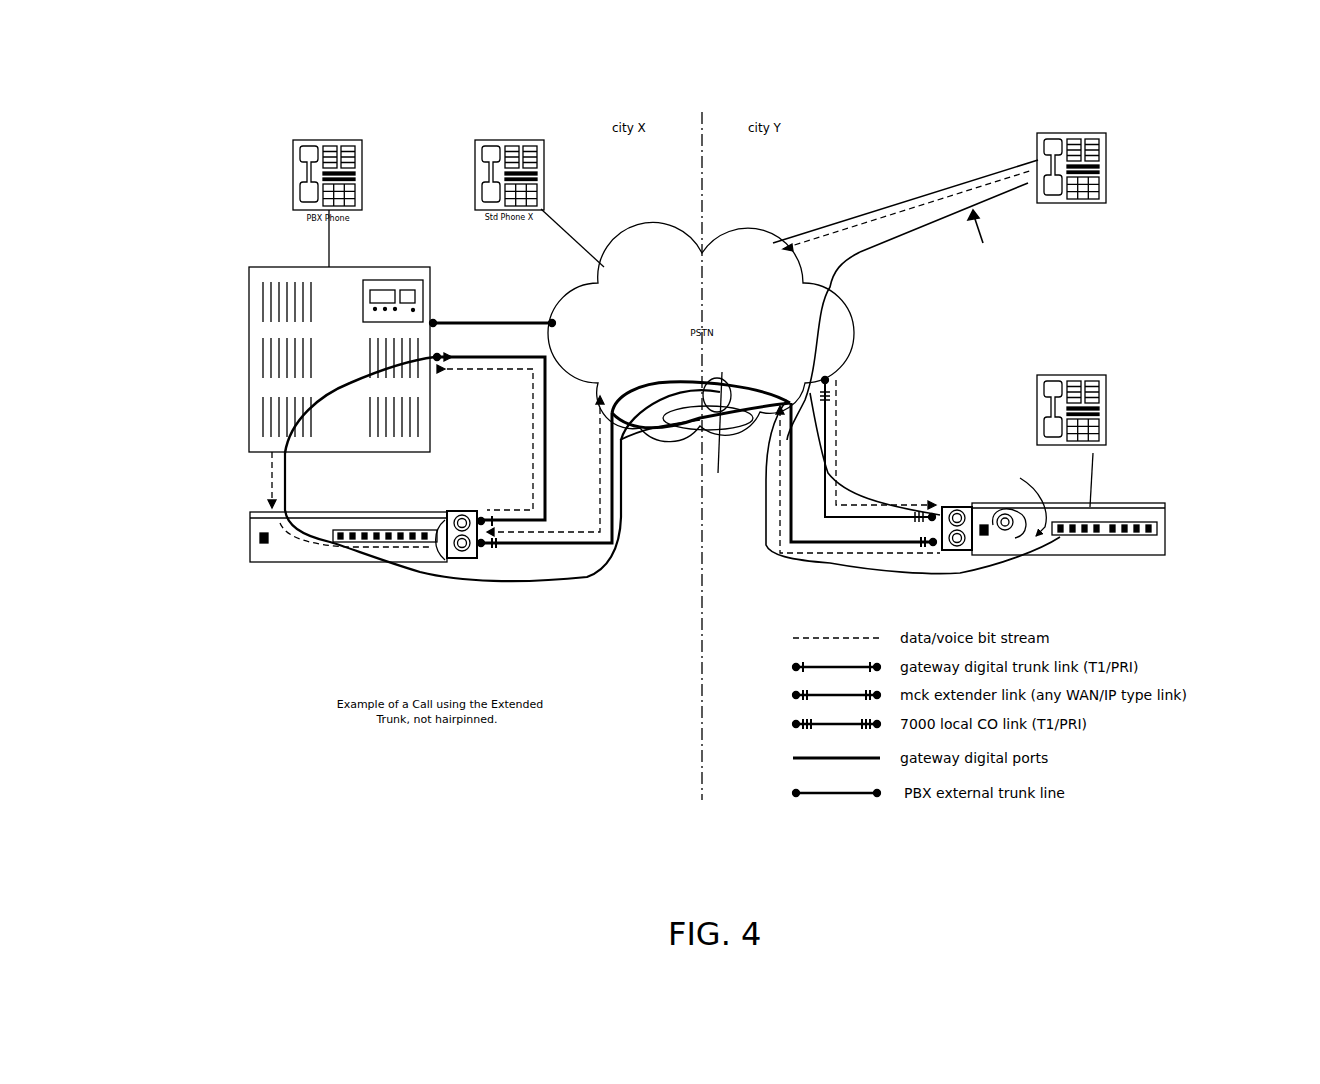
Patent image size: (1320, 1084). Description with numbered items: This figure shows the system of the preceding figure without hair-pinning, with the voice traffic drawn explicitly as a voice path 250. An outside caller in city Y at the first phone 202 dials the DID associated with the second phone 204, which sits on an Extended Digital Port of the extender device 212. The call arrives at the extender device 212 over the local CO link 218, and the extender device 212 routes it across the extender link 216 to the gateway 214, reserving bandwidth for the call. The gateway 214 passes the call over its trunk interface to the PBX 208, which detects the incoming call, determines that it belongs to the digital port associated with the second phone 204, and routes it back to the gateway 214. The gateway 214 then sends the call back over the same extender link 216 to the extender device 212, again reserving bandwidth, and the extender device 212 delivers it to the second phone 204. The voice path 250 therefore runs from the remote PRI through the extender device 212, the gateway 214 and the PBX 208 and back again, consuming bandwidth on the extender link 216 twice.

The first phone 202 is at (1088, 172).
The second phone 204 is at (1088, 413).
The PBX 208 is at (253, 336).
The Extender 7000 212 is at (1163, 535).
The Gateway 2 214 is at (253, 548).
The MCK Extender Link 216 is at (790, 516).
The 7000 local CO link 218 is at (828, 418).
The voice path 250 is at (858, 253).